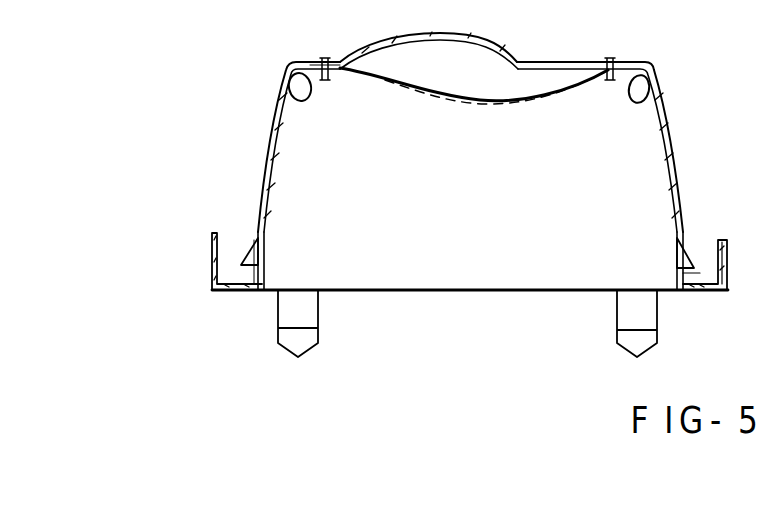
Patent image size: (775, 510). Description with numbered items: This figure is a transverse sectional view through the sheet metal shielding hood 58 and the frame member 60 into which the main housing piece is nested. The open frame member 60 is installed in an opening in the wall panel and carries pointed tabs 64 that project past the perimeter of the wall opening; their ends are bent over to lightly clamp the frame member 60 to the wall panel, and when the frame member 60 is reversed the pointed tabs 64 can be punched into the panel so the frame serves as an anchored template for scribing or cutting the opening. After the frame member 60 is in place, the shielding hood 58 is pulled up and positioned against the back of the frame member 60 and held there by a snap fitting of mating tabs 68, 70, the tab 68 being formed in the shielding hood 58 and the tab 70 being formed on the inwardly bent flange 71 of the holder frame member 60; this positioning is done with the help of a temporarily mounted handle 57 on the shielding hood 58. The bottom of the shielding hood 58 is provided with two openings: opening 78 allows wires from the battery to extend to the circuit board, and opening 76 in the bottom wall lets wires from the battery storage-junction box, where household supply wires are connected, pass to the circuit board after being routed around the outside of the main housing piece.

The temporarily mounted handle 57 is at (493, 102).
The sheet metal shielding hood 58 is at (308, 58).
The frame member 60 is at (698, 279).
The pointed tabs 64 is at (318, 325).
The mating tab 68 is at (246, 258).
The mating tab 70 is at (246, 258).
The inwardly bent flange 71 is at (262, 250).
The opening 76 is at (282, 90).
The opening 78 is at (650, 87).